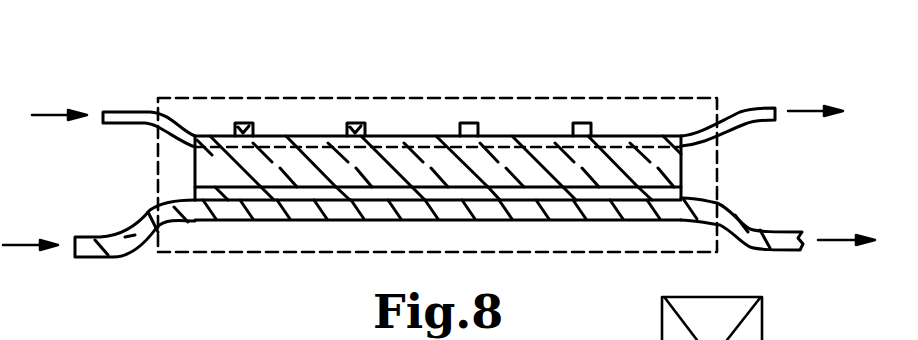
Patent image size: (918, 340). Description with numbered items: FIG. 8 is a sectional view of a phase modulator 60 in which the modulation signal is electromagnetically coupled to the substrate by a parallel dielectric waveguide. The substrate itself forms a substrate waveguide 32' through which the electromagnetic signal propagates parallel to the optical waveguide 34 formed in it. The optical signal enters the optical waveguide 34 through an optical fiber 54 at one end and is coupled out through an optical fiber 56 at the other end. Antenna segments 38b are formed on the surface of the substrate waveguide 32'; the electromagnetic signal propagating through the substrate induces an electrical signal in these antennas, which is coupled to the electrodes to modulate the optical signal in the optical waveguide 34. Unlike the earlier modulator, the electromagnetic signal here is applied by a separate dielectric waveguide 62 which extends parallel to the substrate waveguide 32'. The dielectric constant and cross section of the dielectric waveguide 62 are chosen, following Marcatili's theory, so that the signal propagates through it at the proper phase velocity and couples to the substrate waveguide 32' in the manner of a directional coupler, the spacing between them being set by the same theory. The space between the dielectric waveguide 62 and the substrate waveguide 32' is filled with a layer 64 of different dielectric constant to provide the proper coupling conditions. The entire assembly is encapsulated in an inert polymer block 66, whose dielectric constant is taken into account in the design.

The phase modulator 60 is at (177, 70).
The inert polymer block 66 is at (496, 97).
The optical fiber 54 is at (120, 114).
The optical fiber 56 is at (750, 110).
The dielectric waveguide 62 is at (92, 258).
The layer of different dielectric constant 64 is at (195, 192).
The optical waveguide 34 is at (610, 140).
The substrate waveguide 32' is at (490, 168).
The antenna segment 38b is at (244, 122).